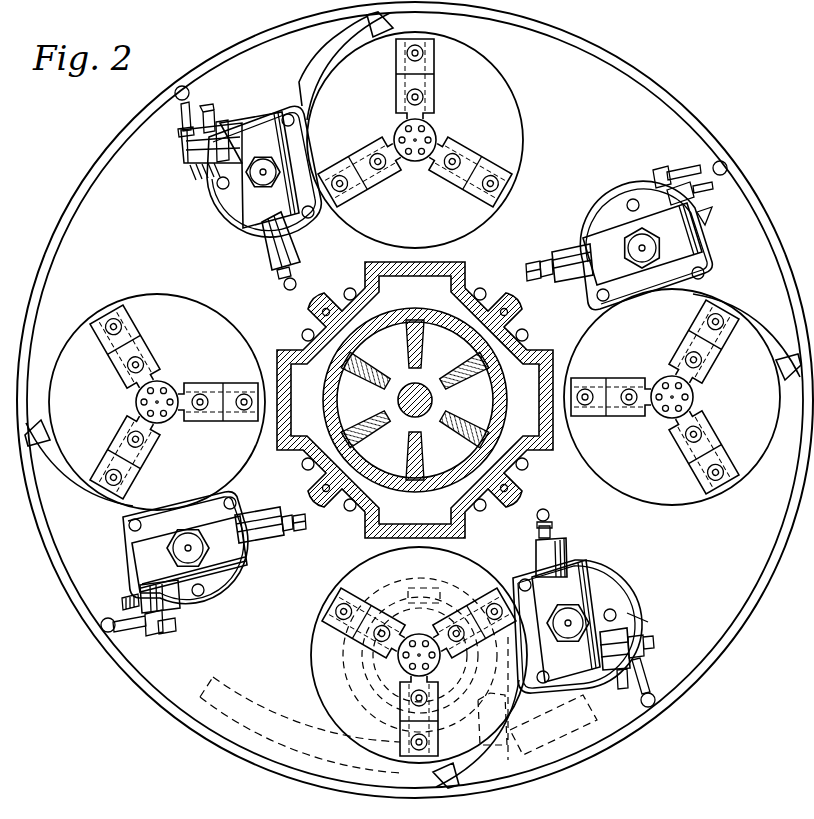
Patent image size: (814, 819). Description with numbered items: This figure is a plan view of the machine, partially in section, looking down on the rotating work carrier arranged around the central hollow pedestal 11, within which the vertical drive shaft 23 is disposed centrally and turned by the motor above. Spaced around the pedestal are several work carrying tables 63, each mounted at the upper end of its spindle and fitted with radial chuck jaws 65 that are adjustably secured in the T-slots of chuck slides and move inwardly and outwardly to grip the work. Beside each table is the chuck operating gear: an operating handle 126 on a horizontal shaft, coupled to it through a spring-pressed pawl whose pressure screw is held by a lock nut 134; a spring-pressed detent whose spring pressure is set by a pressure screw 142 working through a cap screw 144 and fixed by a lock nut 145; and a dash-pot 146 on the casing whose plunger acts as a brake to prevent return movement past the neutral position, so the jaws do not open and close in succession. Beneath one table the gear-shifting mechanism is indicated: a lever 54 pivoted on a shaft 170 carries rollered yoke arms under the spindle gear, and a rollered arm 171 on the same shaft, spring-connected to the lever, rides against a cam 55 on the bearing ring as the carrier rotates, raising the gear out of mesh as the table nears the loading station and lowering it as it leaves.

The central hollow pedestal 11 is at (472, 453).
The vertical drive shaft 23 is at (423, 380).
The work carrying table 63 is at (473, 218).
The chuck jaws 65 is at (396, 96).
The shaft 170 is at (520, 580).
The rollered arm 171 is at (520, 732).
The dash-pot 146 is at (197, 545).
The cap screw 144 is at (277, 518).
The lock nut 145 is at (288, 533).
The pressure screw 142 is at (306, 530).
The lock nut 134 is at (124, 597).
The operating handle 126 is at (128, 630).
The lever 54 is at (446, 590).
The cam 55 is at (278, 712).